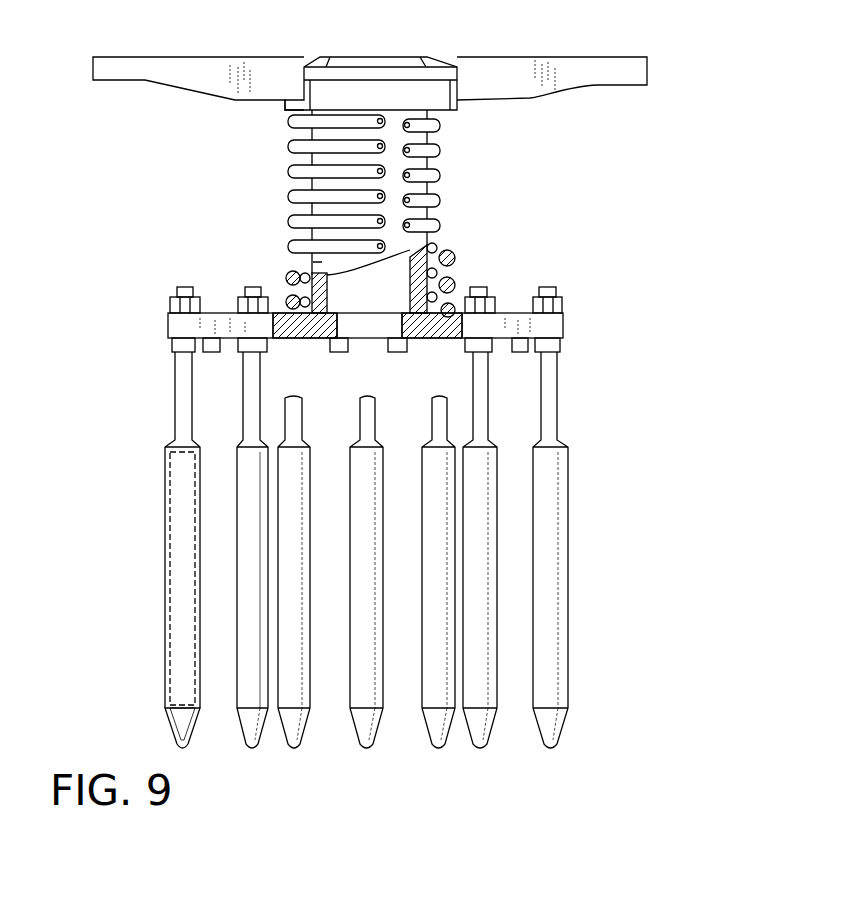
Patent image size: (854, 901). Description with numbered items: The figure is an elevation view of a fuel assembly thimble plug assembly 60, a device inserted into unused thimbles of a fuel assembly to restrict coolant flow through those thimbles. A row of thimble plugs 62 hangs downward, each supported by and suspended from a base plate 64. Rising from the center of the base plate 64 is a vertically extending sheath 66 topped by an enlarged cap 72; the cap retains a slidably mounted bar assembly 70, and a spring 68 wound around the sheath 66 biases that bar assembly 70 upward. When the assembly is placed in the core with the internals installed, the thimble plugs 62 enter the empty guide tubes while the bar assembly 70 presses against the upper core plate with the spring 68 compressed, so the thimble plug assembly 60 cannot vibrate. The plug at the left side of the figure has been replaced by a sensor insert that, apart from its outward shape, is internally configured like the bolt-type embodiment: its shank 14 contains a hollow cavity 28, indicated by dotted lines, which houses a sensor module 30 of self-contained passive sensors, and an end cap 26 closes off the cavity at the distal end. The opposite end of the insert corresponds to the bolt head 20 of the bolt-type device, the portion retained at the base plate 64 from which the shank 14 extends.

The thimble plug assembly 60 is at (610, 458).
The thimble plug 62 is at (338, 571).
The base plate 64 is at (565, 320).
The sheath 66 is at (297, 260).
The spring 68 is at (443, 270).
The bar assembly 70 is at (617, 78).
The enlarged cap 72 is at (397, 70).
The bolt head 20 is at (172, 348).
The shank 14 is at (134, 550).
The end cap 26 is at (177, 728).
The hollow cavity 28 is at (168, 668).
The sensor module 30 is at (180, 570).